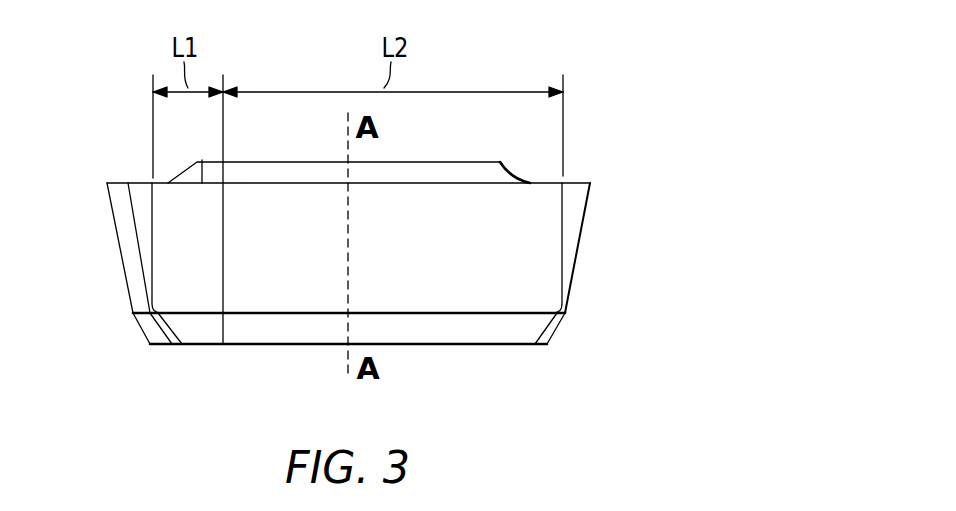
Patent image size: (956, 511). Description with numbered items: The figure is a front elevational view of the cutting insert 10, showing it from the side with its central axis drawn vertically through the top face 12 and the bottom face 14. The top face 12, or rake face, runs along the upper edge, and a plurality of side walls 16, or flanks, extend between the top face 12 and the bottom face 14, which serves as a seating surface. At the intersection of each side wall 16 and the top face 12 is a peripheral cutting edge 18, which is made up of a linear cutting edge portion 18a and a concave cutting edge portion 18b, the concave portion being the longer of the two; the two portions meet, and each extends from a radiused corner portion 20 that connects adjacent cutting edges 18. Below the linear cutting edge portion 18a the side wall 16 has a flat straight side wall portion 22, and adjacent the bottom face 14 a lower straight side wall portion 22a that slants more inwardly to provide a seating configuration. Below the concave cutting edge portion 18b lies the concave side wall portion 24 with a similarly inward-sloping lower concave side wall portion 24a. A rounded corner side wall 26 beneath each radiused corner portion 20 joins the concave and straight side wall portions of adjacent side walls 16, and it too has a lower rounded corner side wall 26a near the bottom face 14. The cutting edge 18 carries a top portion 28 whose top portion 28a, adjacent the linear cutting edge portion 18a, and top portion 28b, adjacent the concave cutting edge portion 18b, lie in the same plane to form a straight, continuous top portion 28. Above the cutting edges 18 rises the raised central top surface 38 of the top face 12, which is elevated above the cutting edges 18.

The cutting insert 10 is at (640, 79).
The top face 12 is at (583, 165).
The bottom face 14 is at (499, 356).
The side wall 16 is at (110, 251).
The cutting edge 18 is at (294, 194).
The linear cutting edge portion 18a is at (182, 184).
The concave cutting edge portion 18b is at (397, 183).
The radiused corner portion 20 is at (573, 185).
The straight side wall portion 22 is at (187, 270).
The lower straight side wall portion 22a is at (197, 328).
The concave side wall portion 24 is at (495, 265).
The lower concave side wall portion 24a is at (437, 330).
The rounded corner side wall 26 is at (573, 223).
The lower rounded corner side wall 26a is at (553, 327).
The top portion 28 is at (545, 174).
The top portion adjacent the linear cutting edge portion 28a is at (202, 160).
The top portion adjacent the concave cutting edge portion 28b is at (470, 183).
The raised central top surface 38 is at (251, 162).